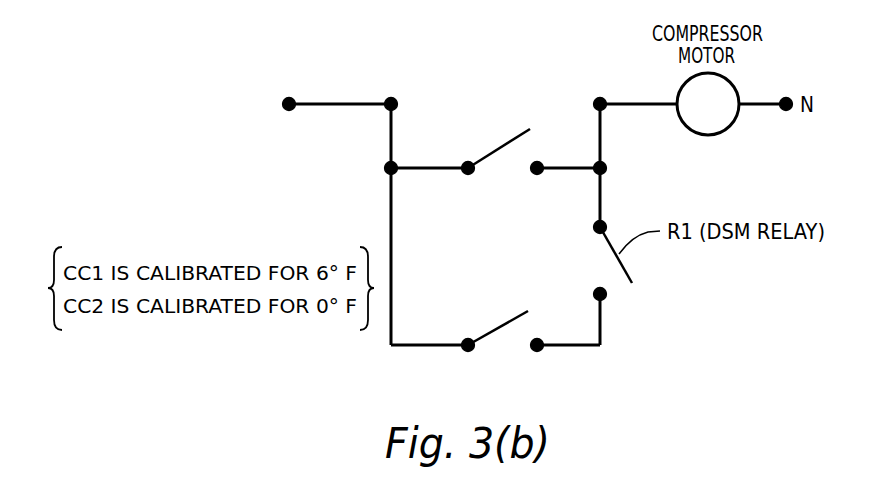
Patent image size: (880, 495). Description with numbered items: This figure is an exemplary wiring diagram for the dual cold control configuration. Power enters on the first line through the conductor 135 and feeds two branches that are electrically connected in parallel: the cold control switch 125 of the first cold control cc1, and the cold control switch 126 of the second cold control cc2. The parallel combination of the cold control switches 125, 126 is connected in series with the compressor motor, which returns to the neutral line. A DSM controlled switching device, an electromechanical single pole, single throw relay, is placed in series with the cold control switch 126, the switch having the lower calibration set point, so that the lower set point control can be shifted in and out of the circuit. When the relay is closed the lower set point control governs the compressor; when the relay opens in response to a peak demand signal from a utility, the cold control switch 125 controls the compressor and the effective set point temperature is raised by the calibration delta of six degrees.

The cold control switch 125 is at (510, 143).
The cold control switch 126 is at (510, 321).
The power line L1 conductor 135 is at (338, 102).